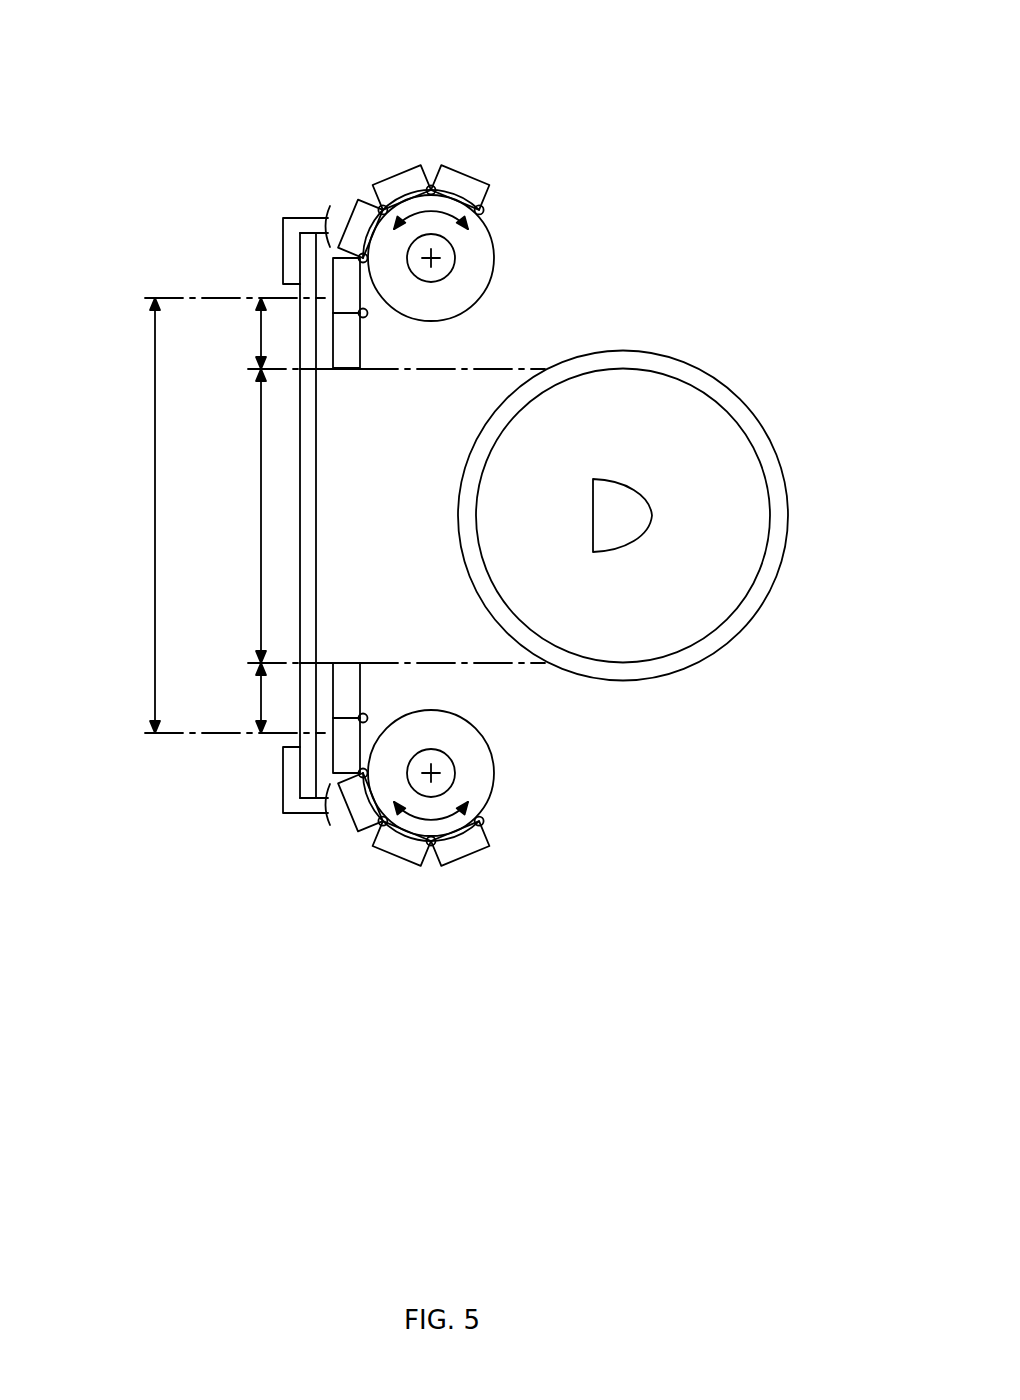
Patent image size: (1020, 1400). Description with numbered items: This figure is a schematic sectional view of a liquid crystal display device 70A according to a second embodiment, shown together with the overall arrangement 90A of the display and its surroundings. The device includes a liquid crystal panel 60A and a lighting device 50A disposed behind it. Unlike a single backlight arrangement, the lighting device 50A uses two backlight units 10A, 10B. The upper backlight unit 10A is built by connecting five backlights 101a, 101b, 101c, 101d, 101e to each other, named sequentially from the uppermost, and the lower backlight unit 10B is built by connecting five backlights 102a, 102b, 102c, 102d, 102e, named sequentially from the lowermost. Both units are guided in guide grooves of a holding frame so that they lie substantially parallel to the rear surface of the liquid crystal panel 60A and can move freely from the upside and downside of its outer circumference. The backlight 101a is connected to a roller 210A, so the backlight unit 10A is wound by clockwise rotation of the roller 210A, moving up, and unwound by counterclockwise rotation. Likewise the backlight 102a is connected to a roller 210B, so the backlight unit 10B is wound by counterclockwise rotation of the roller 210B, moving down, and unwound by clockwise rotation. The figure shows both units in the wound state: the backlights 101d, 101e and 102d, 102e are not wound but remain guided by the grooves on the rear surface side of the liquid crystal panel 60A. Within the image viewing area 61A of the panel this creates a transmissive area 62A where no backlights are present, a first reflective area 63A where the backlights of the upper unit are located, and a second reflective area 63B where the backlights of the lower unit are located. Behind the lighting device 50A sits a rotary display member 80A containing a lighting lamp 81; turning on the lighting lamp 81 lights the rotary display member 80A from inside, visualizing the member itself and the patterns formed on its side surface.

The image forming apparatus 90A is at (665, 66).
The lighting device 50A is at (553, 115).
The rotary display member 80A is at (788, 512).
The lighting lamp 81 is at (652, 516).
The liquid crystal display device 70A is at (233, 228).
The liquid crystal panel 60A is at (304, 592).
The image viewing area 61A is at (151, 518).
The transmissive area 62A is at (259, 519).
The first reflective area 63A is at (259, 335).
The second reflective area 63B is at (259, 700).
The backlight unit 10A is at (502, 113).
The backlight 101a is at (472, 170).
The backlight 101b is at (393, 170).
The backlight 101c is at (345, 203).
The backlight 101d is at (347, 285).
The backlight 101e is at (345, 371).
The roller 210A is at (490, 256).
The backlight unit 10B is at (397, 871).
The backlight 102a is at (467, 872).
The backlight 102b is at (398, 872).
The backlight 102c is at (337, 848).
The backlight 102d is at (402, 718).
The backlight 102e is at (346, 629).
The roller 210B is at (477, 778).